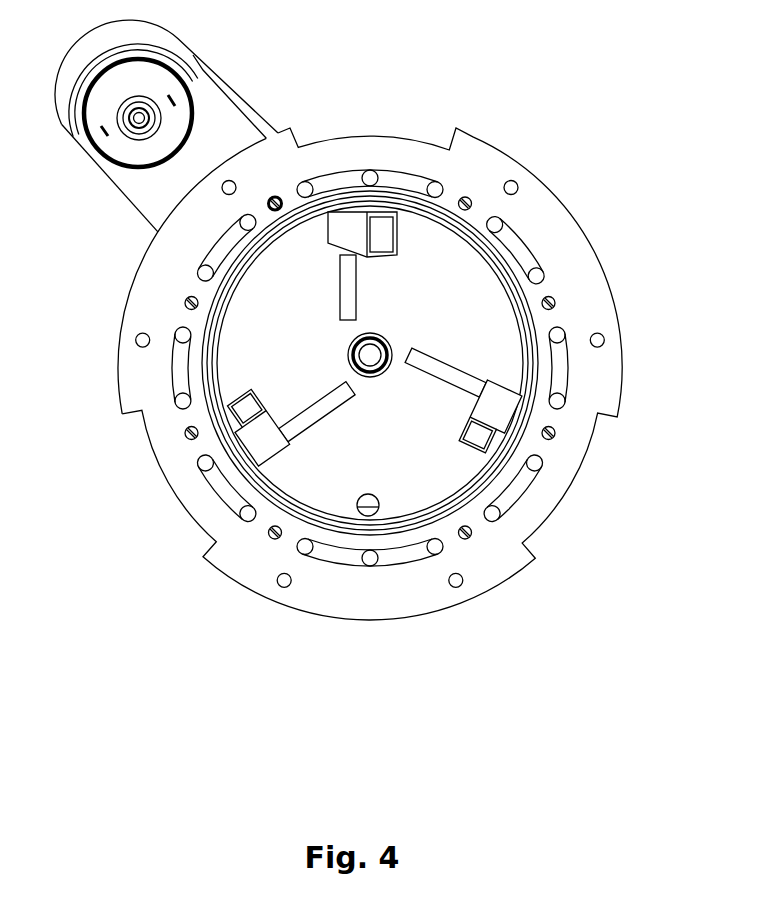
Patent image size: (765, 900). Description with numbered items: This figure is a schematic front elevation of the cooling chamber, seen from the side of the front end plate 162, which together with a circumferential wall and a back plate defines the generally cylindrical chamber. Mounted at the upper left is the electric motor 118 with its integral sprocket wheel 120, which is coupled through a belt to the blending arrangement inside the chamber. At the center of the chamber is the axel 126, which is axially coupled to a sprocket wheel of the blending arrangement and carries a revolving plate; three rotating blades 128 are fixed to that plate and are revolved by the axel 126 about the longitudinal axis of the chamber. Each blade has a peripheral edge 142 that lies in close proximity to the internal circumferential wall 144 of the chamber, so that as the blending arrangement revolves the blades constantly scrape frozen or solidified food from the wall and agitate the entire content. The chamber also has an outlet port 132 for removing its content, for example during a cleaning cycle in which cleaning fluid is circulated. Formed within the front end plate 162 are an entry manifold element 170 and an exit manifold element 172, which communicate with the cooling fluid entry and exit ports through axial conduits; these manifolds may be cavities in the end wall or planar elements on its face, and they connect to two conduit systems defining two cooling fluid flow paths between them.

The electric motor 118 is at (130, 152).
The sprocket wheel 120 is at (464, 142).
The axel 126 is at (370, 357).
The rotating blades 128 is at (257, 453).
The outlet port 132 is at (538, 487).
The peripheral edge 142 is at (500, 355).
The internal circumferential wall 144 is at (233, 323).
The front end plate 162 is at (153, 393).
The entry manifold element 170 is at (347, 555).
The exit manifold element 172 is at (350, 180).